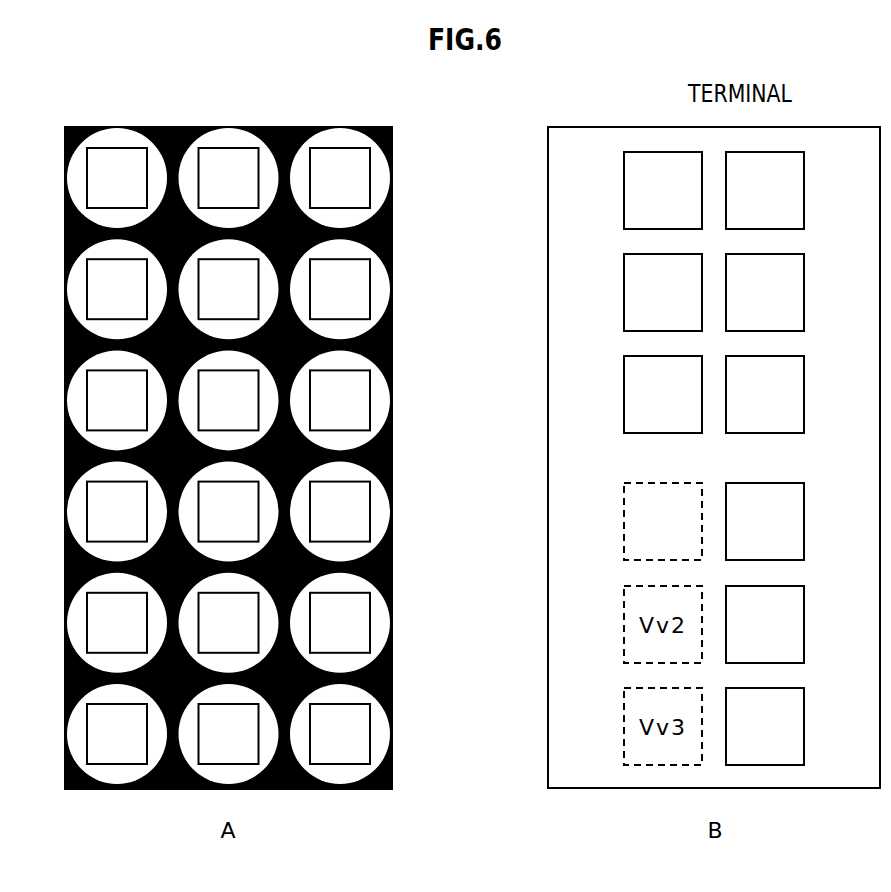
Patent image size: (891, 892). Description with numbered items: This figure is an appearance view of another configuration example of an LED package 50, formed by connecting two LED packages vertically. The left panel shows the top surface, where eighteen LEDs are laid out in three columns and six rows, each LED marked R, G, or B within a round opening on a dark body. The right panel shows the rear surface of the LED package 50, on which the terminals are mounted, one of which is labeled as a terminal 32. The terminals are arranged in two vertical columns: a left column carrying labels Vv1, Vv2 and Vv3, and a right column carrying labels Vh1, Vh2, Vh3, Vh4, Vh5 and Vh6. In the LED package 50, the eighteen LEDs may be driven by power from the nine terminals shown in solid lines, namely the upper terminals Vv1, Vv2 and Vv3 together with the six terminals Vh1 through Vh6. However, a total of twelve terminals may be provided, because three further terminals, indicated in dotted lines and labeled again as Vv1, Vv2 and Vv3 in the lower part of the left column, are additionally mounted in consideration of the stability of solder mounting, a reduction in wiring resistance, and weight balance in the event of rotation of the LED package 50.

The LED package 50 is at (175, 127).
The terminal 32 is at (665, 152).
The vertical-direction terminal 1 Vv1 is at (663, 521).
The vertical-direction terminal 2 Vv2 is at (663, 292).
The vertical-direction terminal 3 Vv3 is at (663, 394).
The horizontal-direction terminal 1 Vh1 is at (765, 190).
The horizontal-direction terminal 2 Vh2 is at (765, 292).
The horizontal-direction terminal 3 Vh3 is at (765, 394).
The horizontal-direction terminal 4 Vh4 is at (765, 521).
The horizontal-direction terminal 5 Vh5 is at (765, 624).
The horizontal-direction terminal 6 Vh6 is at (765, 726).